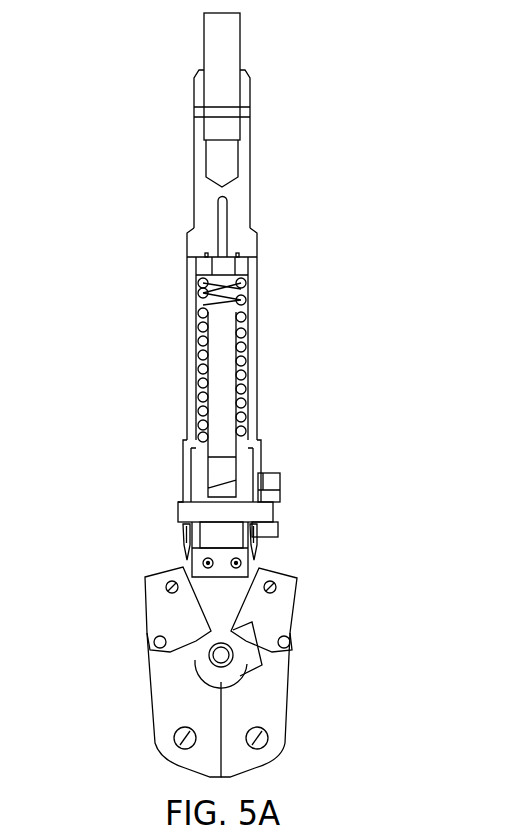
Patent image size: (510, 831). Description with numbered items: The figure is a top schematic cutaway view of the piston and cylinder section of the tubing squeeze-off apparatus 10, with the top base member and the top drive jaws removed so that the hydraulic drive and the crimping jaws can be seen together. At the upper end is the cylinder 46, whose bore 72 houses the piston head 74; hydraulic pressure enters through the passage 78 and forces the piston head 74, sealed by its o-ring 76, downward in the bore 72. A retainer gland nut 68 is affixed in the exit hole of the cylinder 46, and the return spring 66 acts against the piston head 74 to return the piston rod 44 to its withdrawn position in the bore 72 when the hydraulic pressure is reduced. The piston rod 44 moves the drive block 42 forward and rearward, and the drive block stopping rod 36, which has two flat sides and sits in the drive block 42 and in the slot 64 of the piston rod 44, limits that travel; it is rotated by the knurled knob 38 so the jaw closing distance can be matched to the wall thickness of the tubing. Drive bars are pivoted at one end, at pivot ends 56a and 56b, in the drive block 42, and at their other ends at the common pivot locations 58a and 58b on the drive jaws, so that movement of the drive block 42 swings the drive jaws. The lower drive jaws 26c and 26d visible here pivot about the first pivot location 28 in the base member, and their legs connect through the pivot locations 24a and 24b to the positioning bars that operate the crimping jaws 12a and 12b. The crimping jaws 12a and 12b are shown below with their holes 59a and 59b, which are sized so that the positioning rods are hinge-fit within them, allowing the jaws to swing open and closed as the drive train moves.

The squeeze-off apparatus 10 is at (291, 162).
The crimping jaw 12a is at (187, 707).
The crimping jaw 12b is at (235, 701).
The pivot location 24a is at (174, 745).
The pivot location 24b is at (267, 745).
The drive jaw 26c is at (288, 624).
The drive jaw 26d is at (193, 624).
The first pivot location 28 is at (208, 657).
The drive block stopping rod 36 is at (177, 505).
The knurled knob 38 is at (279, 475).
The drive block 42 is at (223, 537).
The piston rod 44 is at (222, 340).
The cylinder 46 is at (186, 257).
The pivot end 56a is at (203, 563).
The pivot end 56b is at (241, 562).
The pivot location 58a is at (166, 589).
The pivot location 58b is at (276, 590).
The hole 59a is at (154, 640).
The hole 59b is at (291, 645).
The slot 64 is at (222, 470).
The return spring 66 is at (209, 407).
The retainer gland nut 68 is at (202, 437).
The bore 72 is at (205, 296).
The piston head 74 is at (217, 322).
The o-ring 76 is at (250, 305).
The passage 78 is at (222, 200).